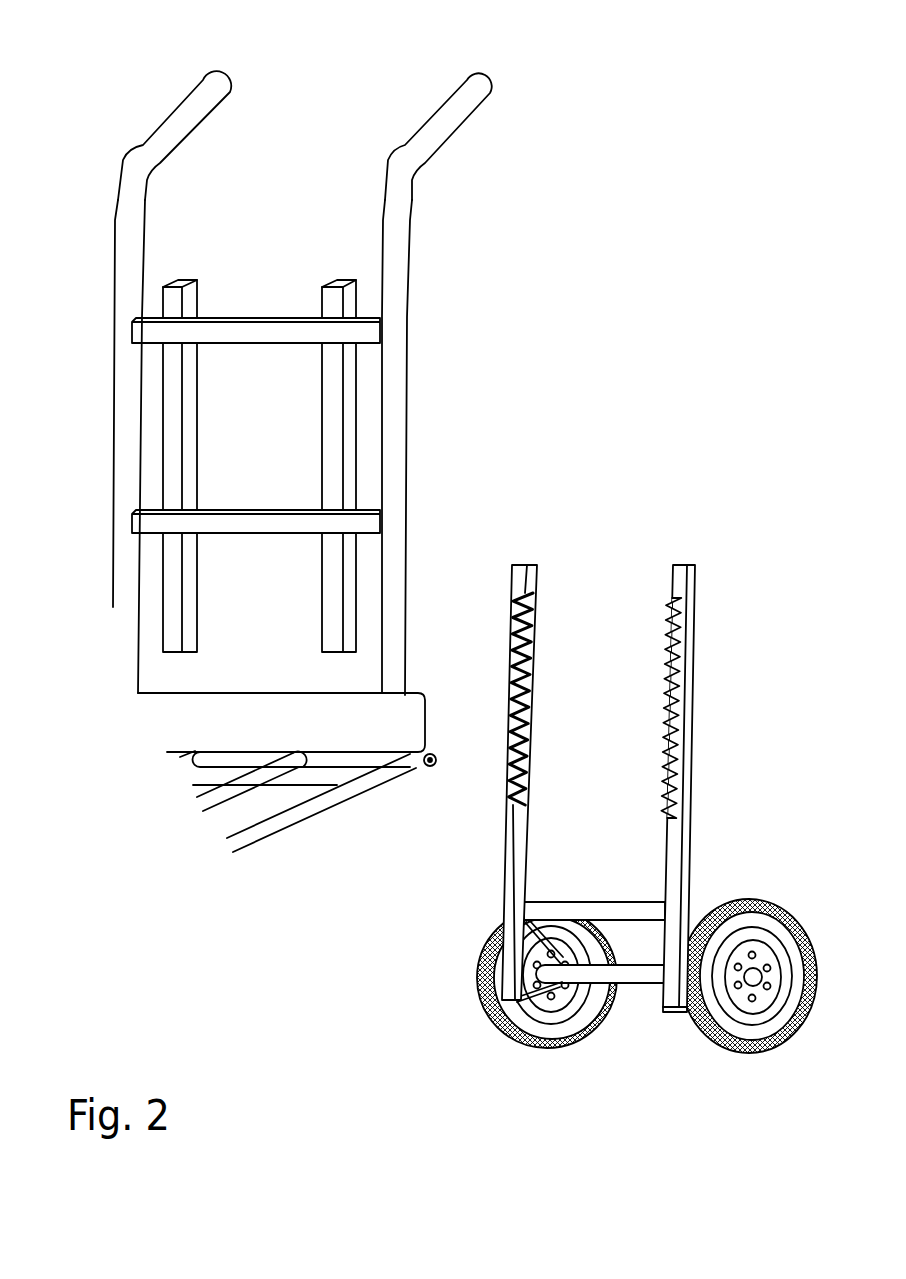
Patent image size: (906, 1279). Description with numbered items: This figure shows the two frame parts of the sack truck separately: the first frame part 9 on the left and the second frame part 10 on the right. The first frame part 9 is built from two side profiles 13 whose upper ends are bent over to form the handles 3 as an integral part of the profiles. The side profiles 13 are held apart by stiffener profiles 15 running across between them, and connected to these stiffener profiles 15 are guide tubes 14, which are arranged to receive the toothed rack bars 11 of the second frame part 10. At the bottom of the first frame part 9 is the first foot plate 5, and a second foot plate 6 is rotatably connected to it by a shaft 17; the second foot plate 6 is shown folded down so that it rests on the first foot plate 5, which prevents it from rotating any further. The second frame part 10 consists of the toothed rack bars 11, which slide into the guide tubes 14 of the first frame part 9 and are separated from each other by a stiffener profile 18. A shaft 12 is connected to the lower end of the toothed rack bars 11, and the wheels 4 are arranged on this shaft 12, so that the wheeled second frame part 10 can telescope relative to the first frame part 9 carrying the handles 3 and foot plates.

The handles 3 is at (165, 133).
The wheels 4 is at (485, 1025).
The first foot plate 5 is at (333, 778).
The second foot plate 6 is at (240, 842).
The first frame part 9 is at (503, 200).
The second frame part 10 is at (740, 590).
The toothed rack bars 11 is at (528, 833).
The shaft 12 is at (638, 978).
The side profiles 13 is at (118, 362).
The guide tubes 14 is at (335, 297).
The stiffener profiles 15 is at (297, 332).
The shaft 17 is at (427, 767).
The stiffener profile 18 is at (580, 905).